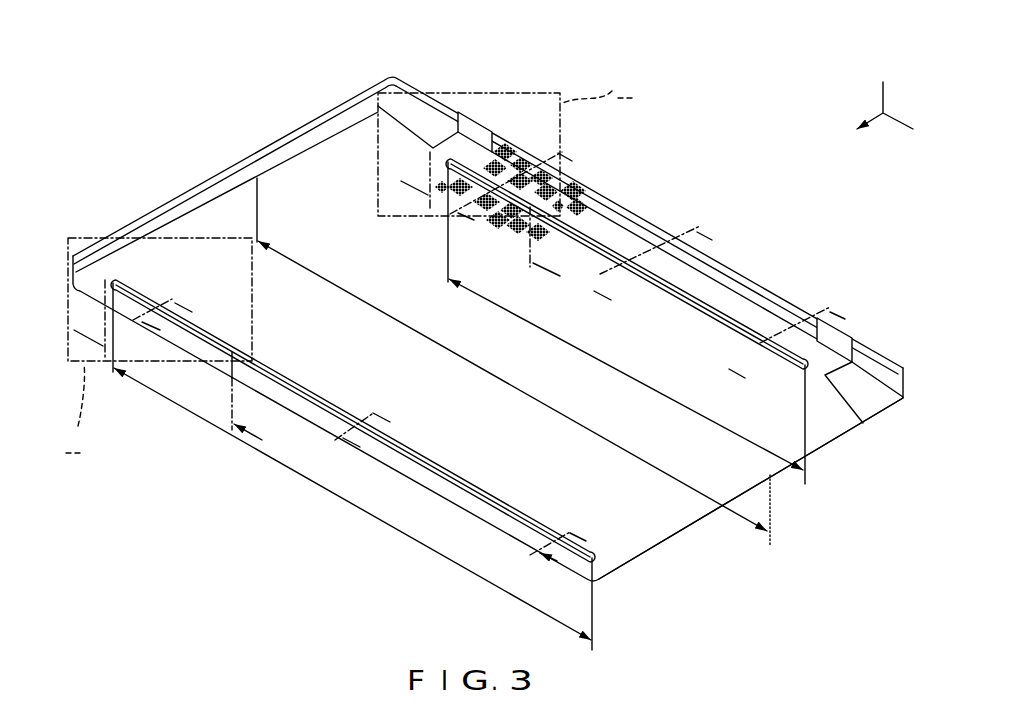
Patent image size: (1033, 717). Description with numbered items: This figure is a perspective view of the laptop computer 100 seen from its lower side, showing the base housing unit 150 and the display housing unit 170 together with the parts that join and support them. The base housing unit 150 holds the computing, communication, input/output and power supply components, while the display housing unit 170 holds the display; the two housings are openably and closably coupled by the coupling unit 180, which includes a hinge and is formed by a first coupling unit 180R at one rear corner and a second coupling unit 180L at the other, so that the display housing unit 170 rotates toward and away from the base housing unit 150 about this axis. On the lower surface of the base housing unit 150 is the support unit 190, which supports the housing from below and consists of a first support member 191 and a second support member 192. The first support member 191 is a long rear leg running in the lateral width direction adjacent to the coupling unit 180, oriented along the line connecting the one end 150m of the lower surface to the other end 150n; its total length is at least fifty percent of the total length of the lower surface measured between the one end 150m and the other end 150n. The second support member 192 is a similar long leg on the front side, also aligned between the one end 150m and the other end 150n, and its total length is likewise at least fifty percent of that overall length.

The laptop computer 100 is at (136, 177).
The base housing unit 150 is at (488, 337).
The one end of the lower surface 150m is at (257, 178).
The other end of the lower surface 150n is at (776, 476).
The display housing unit 170 is at (722, 262).
The coupling unit 180 is at (492, 113).
The first coupling unit 180R is at (471, 127).
The second coupling unit 180L is at (838, 341).
The support unit 190 is at (590, 232).
The first support member 191 is at (625, 242).
The second support member 192 is at (330, 413).